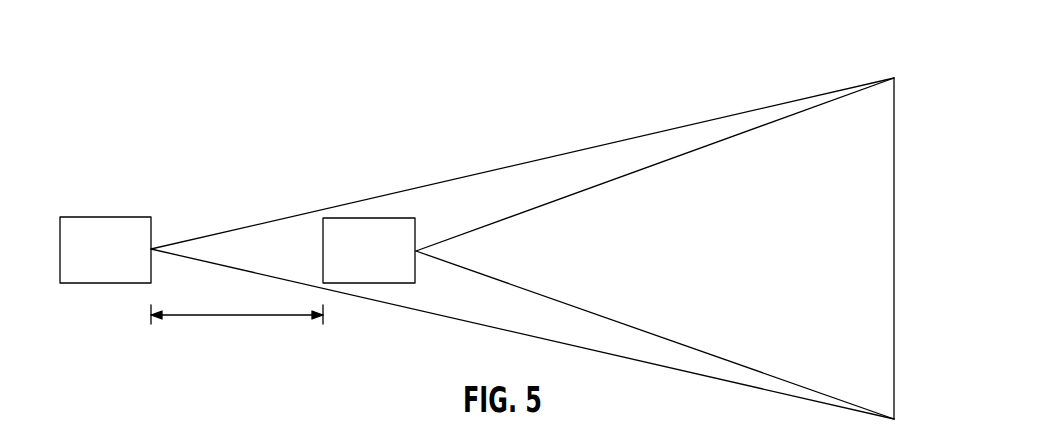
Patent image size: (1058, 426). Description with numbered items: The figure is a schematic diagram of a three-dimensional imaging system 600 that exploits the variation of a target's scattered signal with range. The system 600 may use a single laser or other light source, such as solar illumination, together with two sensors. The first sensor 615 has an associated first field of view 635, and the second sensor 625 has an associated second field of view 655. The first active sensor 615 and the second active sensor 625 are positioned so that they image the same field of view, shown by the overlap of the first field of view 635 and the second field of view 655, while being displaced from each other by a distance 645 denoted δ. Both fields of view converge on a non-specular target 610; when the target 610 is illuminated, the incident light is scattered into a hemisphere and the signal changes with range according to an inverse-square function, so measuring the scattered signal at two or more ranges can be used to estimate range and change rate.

The 3-D imaging system 600 is at (226, 98).
The non-specular target 610 is at (894, 78).
The sensor 1 615 is at (105, 217).
The sensor 2 625 is at (368, 218).
The field of view (FOV1) 635 is at (250, 226).
The distance 645 is at (243, 318).
The field of view (FOV2) 655 is at (680, 152).